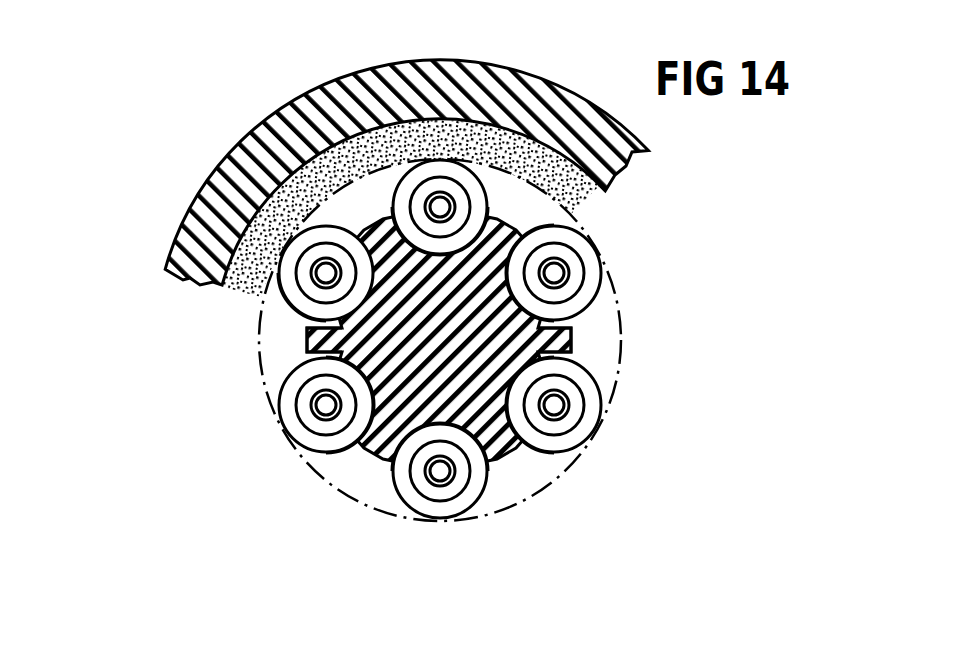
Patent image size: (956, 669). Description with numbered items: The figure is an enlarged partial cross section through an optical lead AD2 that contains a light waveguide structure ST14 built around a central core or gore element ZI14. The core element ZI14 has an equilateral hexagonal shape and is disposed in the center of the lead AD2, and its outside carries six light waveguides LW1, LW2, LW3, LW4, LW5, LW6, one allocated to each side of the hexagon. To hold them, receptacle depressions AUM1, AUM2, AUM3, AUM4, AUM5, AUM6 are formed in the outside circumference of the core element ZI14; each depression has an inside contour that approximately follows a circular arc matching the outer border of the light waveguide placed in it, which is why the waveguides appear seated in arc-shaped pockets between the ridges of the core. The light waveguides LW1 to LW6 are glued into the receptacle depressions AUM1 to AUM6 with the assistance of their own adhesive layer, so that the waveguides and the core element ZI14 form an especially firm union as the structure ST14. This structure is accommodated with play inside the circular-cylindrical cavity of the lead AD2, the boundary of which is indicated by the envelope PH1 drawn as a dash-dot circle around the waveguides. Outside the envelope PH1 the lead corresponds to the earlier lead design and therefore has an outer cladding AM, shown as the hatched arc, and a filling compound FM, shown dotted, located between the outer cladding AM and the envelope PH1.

The outer cladding AM is at (198, 216).
The filling compound FM is at (252, 280).
The envelope PH1 is at (622, 380).
The optical lead AD2 is at (419, 304).
The light waveguide structure ST14 is at (506, 476).
The core element ZI14 is at (575, 345).
The receptacle depression AUM1 is at (368, 222).
The receptacle depression AUM2 is at (489, 197).
The receptacle depression AUM3 is at (550, 323).
The receptacle depression AUM4 is at (537, 456).
The receptacle depression AUM5 is at (393, 442).
The receptacle depression AUM6 is at (276, 380).
The light waveguide LW1 is at (307, 238).
The light waveguide LW2 is at (420, 180).
The light waveguide LW3 is at (588, 254).
The light waveguide LW4 is at (597, 418).
The light waveguide LW5 is at (460, 502).
The light waveguide LW6 is at (310, 445).